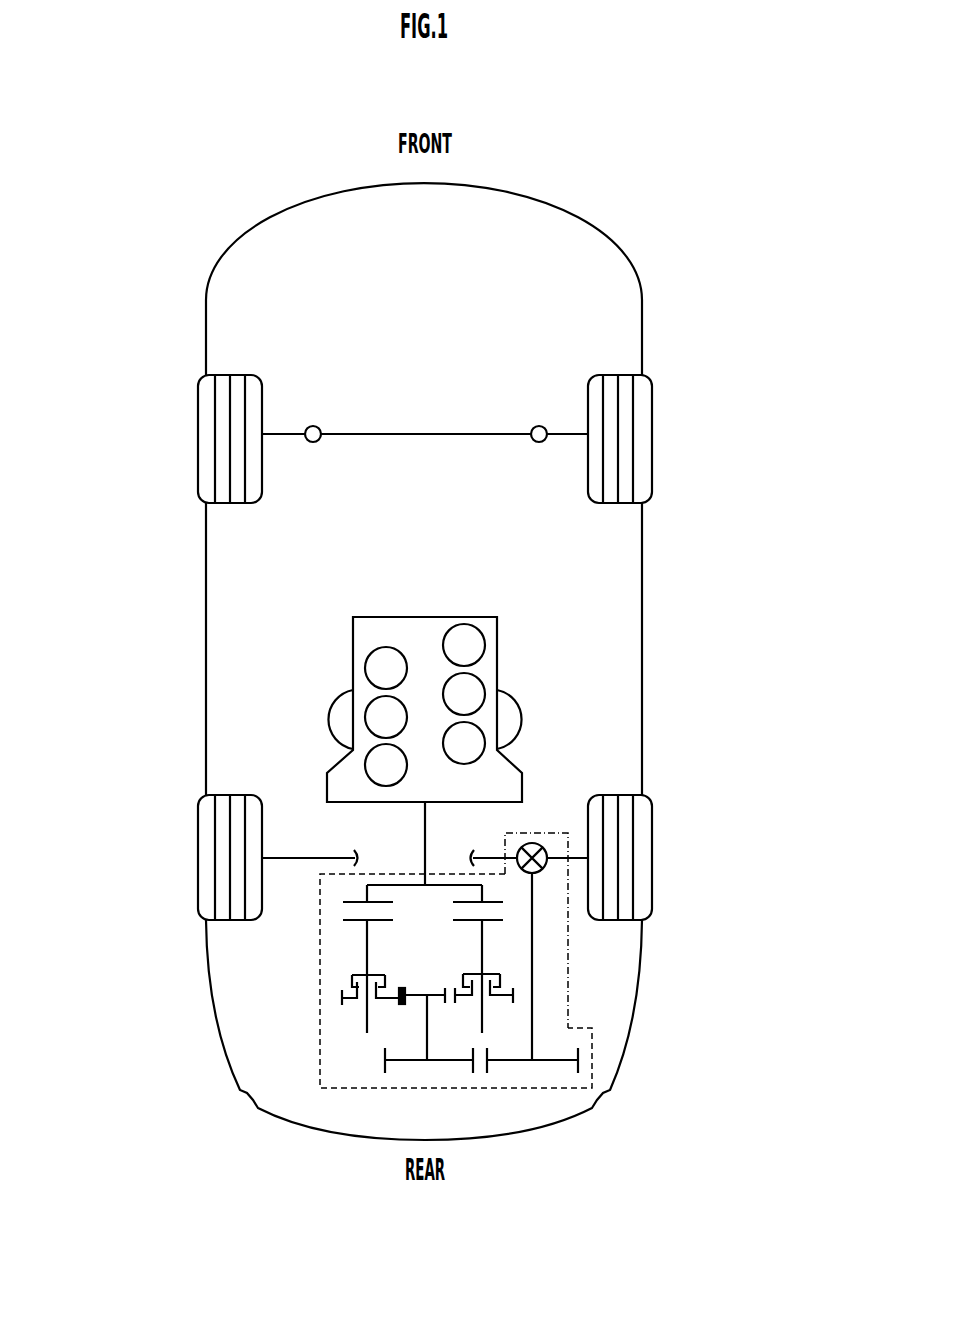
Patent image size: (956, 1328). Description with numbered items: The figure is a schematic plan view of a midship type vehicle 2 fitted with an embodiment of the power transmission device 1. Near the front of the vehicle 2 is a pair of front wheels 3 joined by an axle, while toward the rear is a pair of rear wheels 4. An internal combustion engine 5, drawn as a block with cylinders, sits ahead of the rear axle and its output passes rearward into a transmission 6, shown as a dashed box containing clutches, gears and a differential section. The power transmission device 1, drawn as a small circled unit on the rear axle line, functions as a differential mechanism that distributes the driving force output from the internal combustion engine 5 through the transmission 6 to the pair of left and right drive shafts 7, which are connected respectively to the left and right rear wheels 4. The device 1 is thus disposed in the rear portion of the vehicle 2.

The power transmission device 1 is at (542, 837).
The vehicle 2 is at (228, 207).
The front wheels 3 is at (198, 437).
The rear wheels 4 is at (198, 842).
The internal combustion engine 5 is at (497, 647).
The transmission 6 is at (353, 1016).
The drive shafts 7 is at (555, 868).